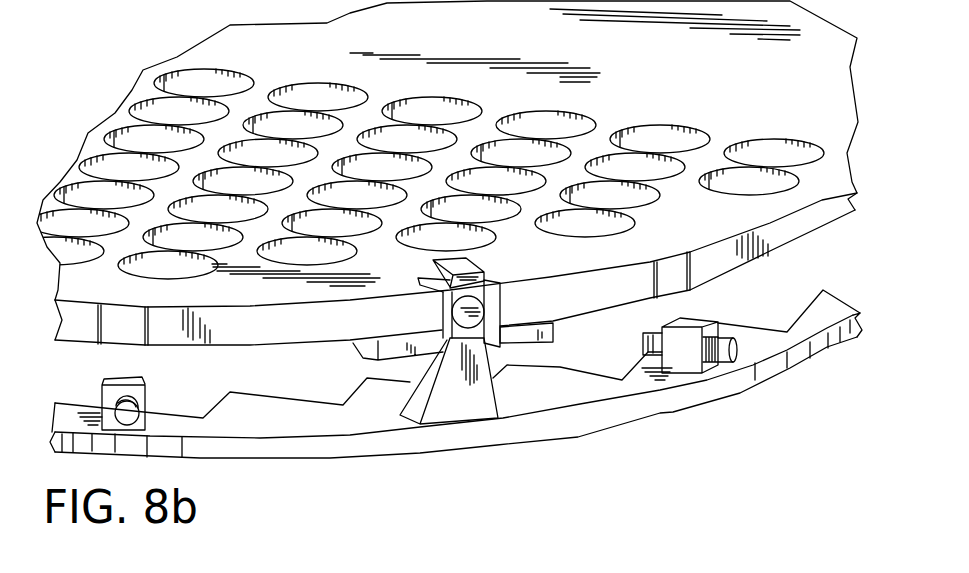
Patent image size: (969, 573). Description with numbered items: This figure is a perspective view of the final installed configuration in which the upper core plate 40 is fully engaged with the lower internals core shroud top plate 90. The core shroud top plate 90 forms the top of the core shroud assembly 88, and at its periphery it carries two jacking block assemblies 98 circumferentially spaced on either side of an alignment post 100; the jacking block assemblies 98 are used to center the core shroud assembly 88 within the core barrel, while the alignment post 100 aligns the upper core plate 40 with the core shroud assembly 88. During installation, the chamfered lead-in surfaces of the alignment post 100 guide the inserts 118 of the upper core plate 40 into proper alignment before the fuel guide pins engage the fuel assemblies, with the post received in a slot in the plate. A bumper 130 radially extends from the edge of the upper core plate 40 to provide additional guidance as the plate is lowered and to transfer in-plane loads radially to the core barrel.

The upper core plate 40 is at (704, 233).
The core shroud assembly 88 is at (456, 388).
The core shroud top plate 90 is at (287, 435).
The jacking block assembly 98 is at (145, 392).
The alignment post 100 is at (489, 414).
The insert 118 is at (537, 340).
The bumper 130 is at (135, 324).